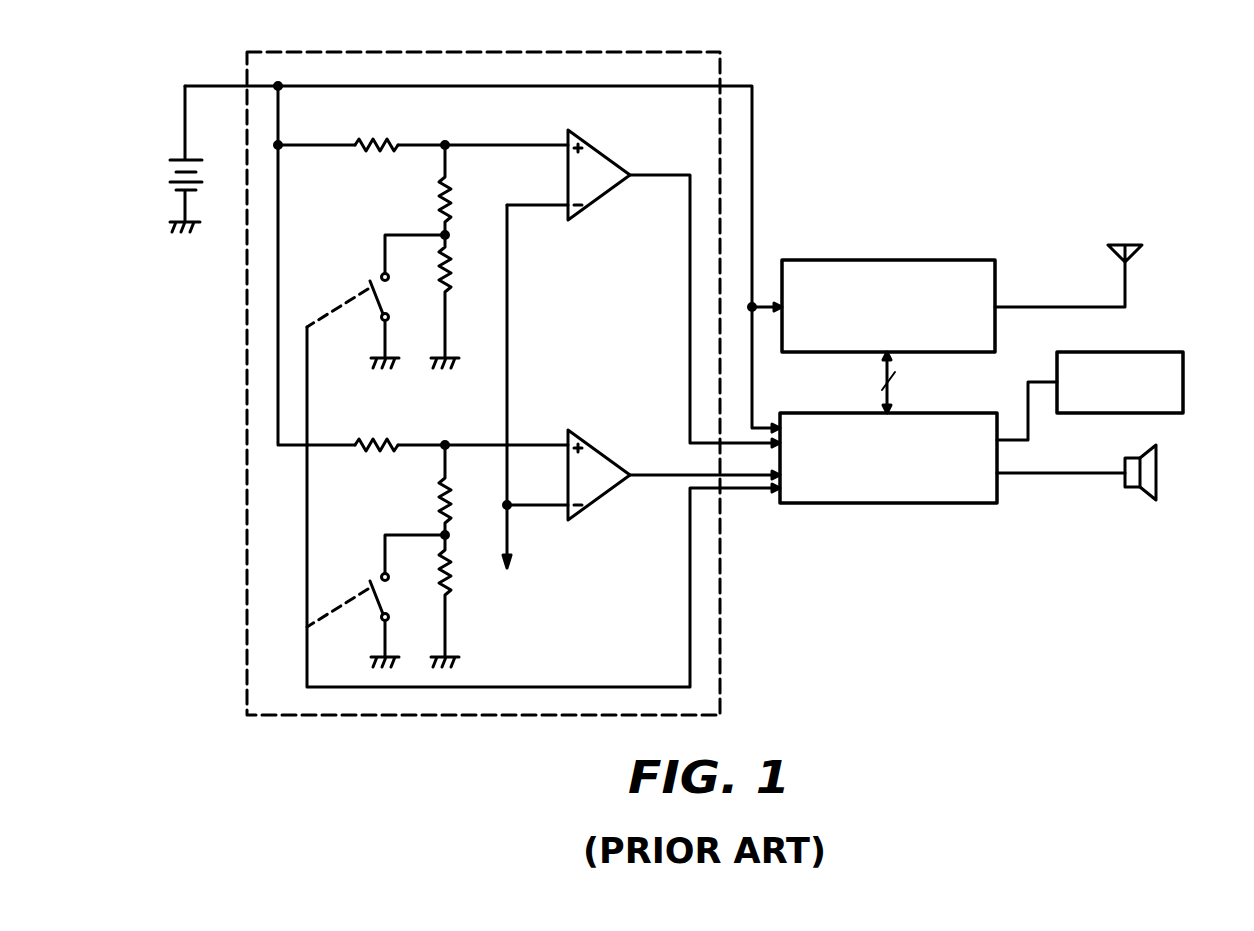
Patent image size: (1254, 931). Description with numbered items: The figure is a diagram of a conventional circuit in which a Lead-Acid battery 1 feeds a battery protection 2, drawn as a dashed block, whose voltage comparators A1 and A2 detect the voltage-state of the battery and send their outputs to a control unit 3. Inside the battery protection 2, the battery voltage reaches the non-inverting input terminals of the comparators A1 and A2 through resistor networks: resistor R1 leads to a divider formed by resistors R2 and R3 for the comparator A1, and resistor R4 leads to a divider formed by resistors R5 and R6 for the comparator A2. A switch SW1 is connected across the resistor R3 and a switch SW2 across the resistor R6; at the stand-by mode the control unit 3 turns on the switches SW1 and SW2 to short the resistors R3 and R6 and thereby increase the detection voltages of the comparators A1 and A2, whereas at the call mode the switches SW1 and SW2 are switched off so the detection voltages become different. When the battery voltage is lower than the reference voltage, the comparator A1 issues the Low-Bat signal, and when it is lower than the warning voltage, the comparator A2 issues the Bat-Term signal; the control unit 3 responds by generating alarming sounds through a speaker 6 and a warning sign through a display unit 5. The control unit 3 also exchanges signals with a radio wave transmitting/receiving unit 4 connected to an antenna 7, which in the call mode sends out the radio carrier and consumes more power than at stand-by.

The Lead-Acid battery 1 is at (178, 159).
The battery protection 2 is at (467, 48).
The control unit 3 is at (880, 515).
The radio wave transmitting/receiving unit 4 is at (877, 250).
The display unit 5 is at (1195, 370).
The speaker 6 is at (1169, 461).
The antenna 7 is at (1125, 235).
The resistor R1 is at (376, 134).
The resistor R2 is at (460, 189).
The resistor R3 is at (456, 300).
The resistor R4 is at (376, 434).
The resistor R5 is at (460, 489).
The resistor R6 is at (456, 600).
The switch SW1 is at (376, 301).
The switch SW2 is at (376, 601).
The voltage comparator A1 is at (591, 134).
The voltage comparator A2 is at (591, 434).